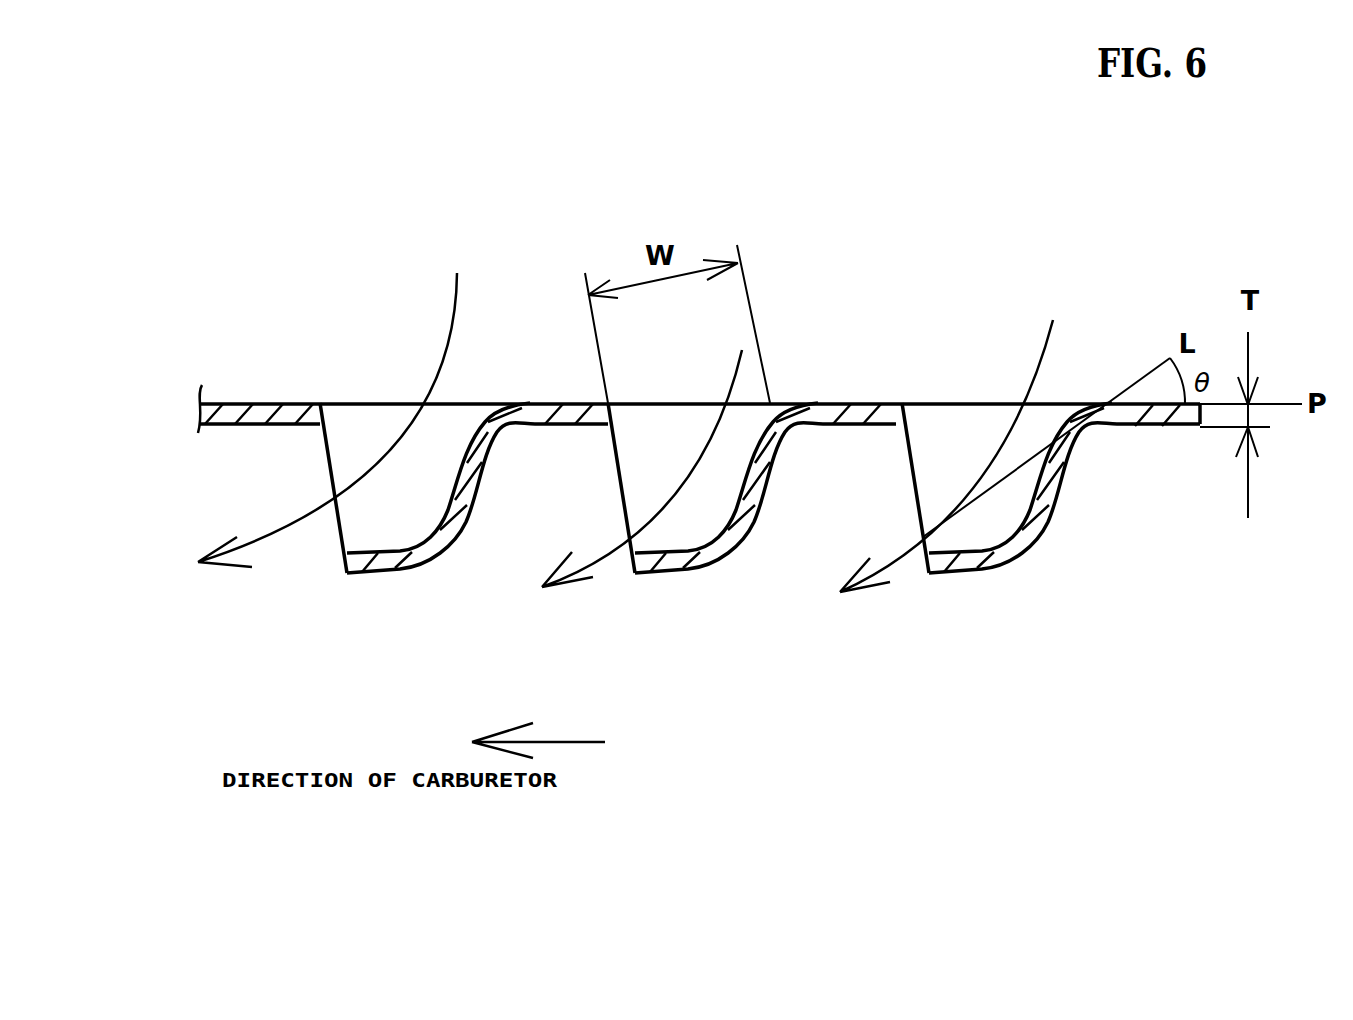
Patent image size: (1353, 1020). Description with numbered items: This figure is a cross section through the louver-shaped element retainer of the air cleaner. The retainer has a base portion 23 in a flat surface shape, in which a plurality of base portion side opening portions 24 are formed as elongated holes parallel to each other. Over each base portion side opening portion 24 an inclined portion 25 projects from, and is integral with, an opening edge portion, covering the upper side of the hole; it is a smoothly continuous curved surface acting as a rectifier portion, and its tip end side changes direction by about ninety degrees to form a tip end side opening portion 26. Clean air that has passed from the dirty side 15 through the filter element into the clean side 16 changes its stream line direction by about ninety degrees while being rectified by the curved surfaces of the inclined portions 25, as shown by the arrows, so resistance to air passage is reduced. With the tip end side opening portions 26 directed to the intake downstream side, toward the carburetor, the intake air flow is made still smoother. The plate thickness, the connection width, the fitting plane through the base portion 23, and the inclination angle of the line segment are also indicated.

The dirty side 15 is at (935, 152).
The clean side 16 is at (856, 732).
The base portion 23 is at (240, 402).
The base portion side opening portion 24 is at (400, 402).
The inclined portion 25 is at (443, 553).
The tip end side opening portion 26 is at (323, 453).